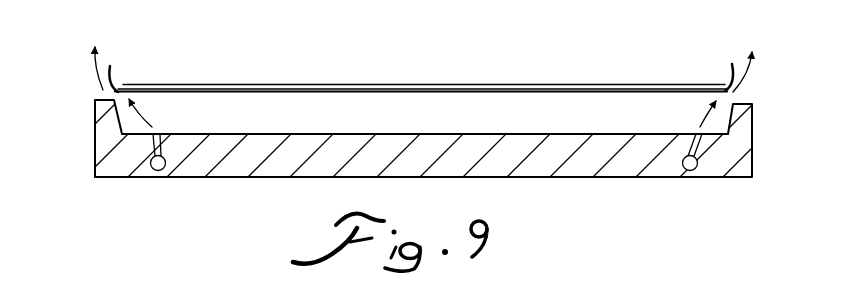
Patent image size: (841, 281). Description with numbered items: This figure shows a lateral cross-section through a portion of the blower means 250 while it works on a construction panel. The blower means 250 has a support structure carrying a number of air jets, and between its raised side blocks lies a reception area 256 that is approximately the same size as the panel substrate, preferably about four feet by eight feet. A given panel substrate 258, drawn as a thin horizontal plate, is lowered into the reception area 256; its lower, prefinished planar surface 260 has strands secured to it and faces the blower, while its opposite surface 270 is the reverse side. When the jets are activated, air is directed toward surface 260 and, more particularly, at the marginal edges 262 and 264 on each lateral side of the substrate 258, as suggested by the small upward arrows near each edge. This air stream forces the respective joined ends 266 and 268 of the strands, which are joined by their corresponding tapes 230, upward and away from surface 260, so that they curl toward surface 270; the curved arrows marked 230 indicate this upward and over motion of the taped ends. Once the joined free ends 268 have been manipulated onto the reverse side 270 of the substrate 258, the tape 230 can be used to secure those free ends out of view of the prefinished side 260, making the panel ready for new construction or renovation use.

The tape 230 is at (106, 61).
The blower means 250 is at (78, 165).
The reception area 256 is at (437, 131).
The panel substrate 258 is at (452, 84).
The planar surface 260 is at (228, 96).
The marginal edge 262 is at (143, 94).
The marginal edge 264 is at (694, 96).
The joined ends 266 is at (110, 63).
The joined free ends 268 is at (732, 63).
The surface 270 is at (310, 84).